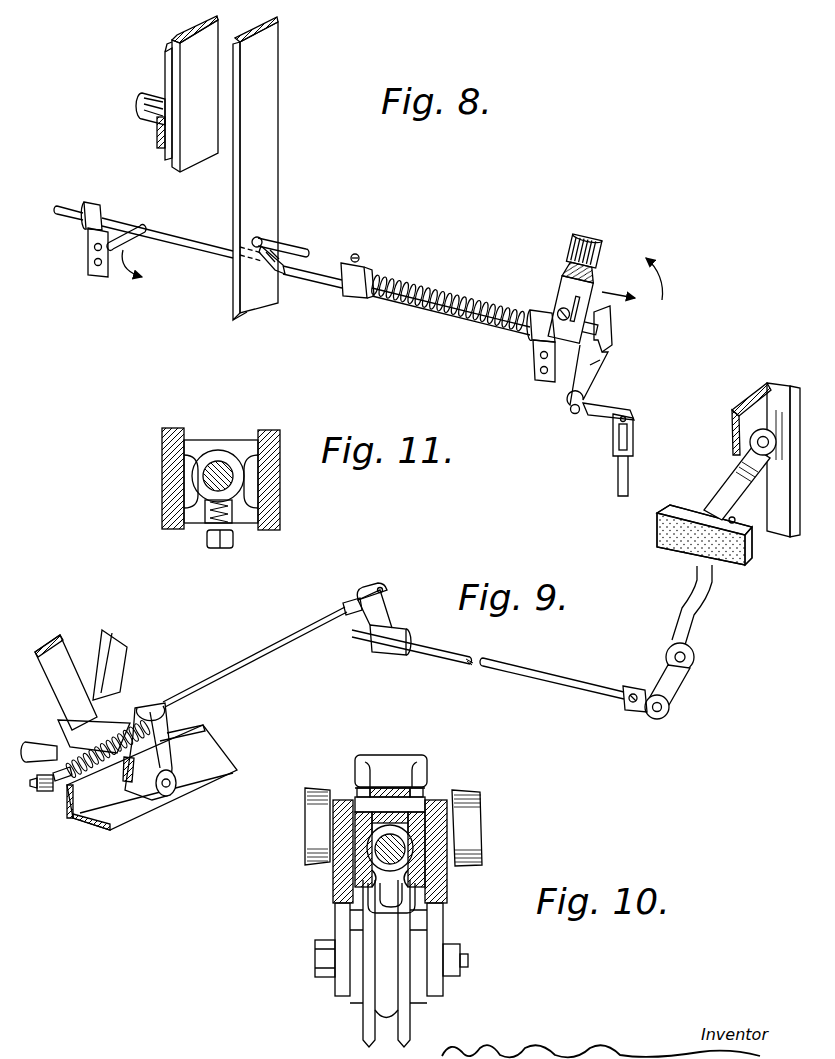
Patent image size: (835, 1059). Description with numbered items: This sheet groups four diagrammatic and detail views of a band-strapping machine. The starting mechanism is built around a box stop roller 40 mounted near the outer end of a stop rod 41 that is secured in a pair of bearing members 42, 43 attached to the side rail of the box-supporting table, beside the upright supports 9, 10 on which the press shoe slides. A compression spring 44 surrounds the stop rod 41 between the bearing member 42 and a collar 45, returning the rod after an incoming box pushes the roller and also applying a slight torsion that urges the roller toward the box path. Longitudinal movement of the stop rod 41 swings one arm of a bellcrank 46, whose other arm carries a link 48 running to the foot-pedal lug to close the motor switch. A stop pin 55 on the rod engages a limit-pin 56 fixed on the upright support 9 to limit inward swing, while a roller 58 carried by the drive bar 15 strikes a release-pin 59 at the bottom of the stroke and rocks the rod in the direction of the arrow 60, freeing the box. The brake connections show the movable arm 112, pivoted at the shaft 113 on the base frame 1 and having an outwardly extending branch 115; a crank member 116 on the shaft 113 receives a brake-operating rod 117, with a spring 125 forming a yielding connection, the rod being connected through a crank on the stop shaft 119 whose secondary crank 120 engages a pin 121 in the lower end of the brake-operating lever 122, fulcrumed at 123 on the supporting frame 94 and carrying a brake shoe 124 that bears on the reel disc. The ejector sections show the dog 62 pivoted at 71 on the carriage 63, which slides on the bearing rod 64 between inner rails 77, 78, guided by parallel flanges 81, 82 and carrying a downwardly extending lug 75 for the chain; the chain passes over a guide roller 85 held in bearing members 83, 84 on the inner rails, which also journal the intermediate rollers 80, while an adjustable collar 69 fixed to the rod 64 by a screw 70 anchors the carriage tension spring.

In FIG. 9, the base frame 1 is at (203, 750).
In FIG. 8, the upright support 9 is at (273, 112).
In FIG. 8, the upright support 10 is at (203, 79).
In FIG. 8, the drive bar 15 is at (165, 60).
In FIG. 8, the box stop roller 40 is at (574, 245).
In FIG. 8, the stop rod 41 is at (325, 284).
In FIG. 8, the bearing member 42 is at (534, 344).
In FIG. 8, the bearing member 43 is at (90, 240).
In FIG. 8, the compression spring 44 is at (421, 288).
In FIG. 8, the collar 45 is at (359, 288).
In FIG. 8, the bellcrank 46 is at (605, 378).
In FIG. 8, the link 48 is at (620, 486).
In FIG. 8, the stop pin 55 is at (261, 244).
In FIG. 8, the limit-pin 56 is at (303, 254).
In FIG. 8, the roller 58 is at (138, 118).
In FIG. 8, the release-pin 59 is at (121, 236).
In FIG. 8, the arrow 60 is at (145, 261).
In FIG. 10, the dog 62 is at (383, 758).
In FIG. 10, the carriage 63 is at (430, 789).
In FIG. 11, the bearing rod 64 is at (218, 468).
In FIG. 10, the bearing rod 64 is at (401, 851).
In FIG. 11, the adjustable collar 69 is at (233, 440).
In FIG. 11, the screw 70 is at (228, 548).
In FIG. 10, the pivot 71 is at (397, 804).
In FIG. 10, the lug 75 is at (398, 900).
In FIG. 11, the inner rail 77 is at (162, 470).
In FIG. 10, the inner rail 77 is at (337, 888).
In FIG. 11, the inner rail 78 is at (281, 504).
In FIG. 10, the inner rail 78 is at (447, 888).
In FIG. 10, the intermediate roller 80 is at (314, 826).
In FIG. 10, the flange 81 is at (413, 834).
In FIG. 10, the flange 82 is at (370, 862).
In FIG. 10, the bearing member 83 is at (335, 921).
In FIG. 10, the bearing member 84 is at (446, 921).
In FIG. 10, the guide roller 85 is at (360, 990).
In FIG. 9, the supporting frame 94 is at (755, 400).
In FIG. 9, the movable arm 112 is at (72, 654).
In FIG. 9, the pivot shaft 113 is at (174, 792).
In FIG. 9, the branch 115 is at (122, 660).
In FIG. 9, the crank member 116 is at (392, 612).
In FIG. 9, the brake-operating rod 117 is at (271, 654).
In FIG. 9, the stop shaft 119 is at (466, 665).
In FIG. 9, the secondary crank 120 is at (670, 680).
In FIG. 9, the pin 121 is at (690, 658).
In FIG. 9, the brake-operating lever 122 is at (717, 622).
In FIG. 9, the fulcrum 123 is at (756, 442).
In FIG. 9, the brake shoe 124 is at (670, 545).
In FIG. 9, the spring 125 is at (72, 822).